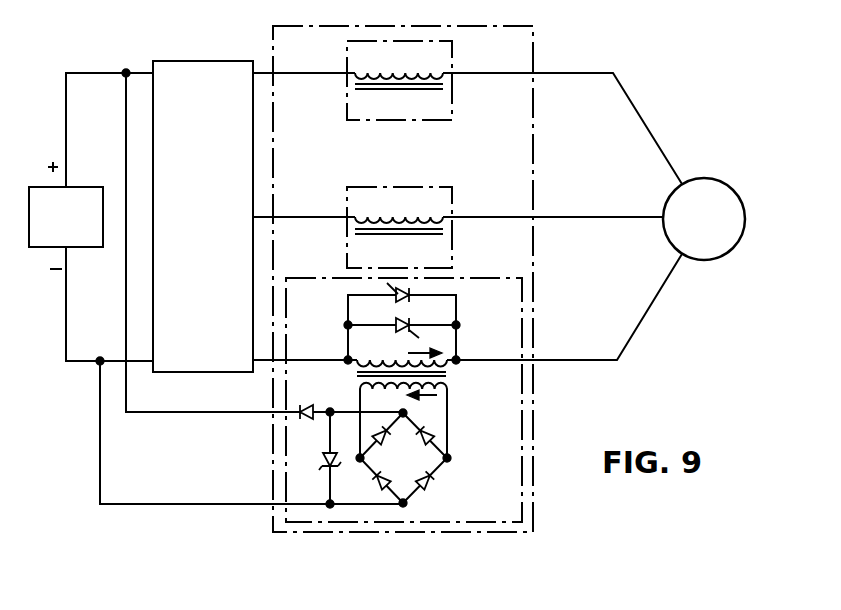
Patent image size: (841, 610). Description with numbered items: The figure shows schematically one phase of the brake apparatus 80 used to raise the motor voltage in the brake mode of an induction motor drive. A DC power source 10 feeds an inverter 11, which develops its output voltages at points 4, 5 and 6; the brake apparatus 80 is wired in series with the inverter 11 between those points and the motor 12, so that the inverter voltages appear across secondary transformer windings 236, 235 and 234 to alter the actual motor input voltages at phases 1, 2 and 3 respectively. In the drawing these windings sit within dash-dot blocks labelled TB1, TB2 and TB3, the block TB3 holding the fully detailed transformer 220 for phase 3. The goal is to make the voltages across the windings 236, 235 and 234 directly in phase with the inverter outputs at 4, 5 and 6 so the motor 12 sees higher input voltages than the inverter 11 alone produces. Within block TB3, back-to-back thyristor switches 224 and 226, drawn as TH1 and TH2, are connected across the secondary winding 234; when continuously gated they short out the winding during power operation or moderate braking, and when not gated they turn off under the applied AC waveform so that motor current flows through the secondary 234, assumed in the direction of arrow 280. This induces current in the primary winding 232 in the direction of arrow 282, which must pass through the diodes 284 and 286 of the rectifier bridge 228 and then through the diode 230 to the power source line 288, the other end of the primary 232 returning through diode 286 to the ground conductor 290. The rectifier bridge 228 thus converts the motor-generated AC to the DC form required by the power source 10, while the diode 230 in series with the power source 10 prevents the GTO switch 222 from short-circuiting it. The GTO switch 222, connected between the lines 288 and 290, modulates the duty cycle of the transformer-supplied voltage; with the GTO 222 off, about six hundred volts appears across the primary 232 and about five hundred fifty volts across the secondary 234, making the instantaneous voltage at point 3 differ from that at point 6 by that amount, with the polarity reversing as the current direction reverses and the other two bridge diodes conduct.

The DC power source 10 is at (80, 187).
The inverter 11 is at (190, 61).
The inverter output point 4 is at (265, 72).
The inverter output point 5 is at (266, 217).
The inverter output point 6 is at (266, 360).
The motor phase 1 is at (585, 73).
The motor phase 2 is at (593, 217).
The motor phase 3 is at (577, 360).
The motor 12 is at (703, 178).
The brake apparatus 80 is at (533, 50).
The transformer block 1 TB1 is at (452, 47).
The transformer block 2 TB2 is at (452, 193).
The transformer block 3 TB3 is at (480, 278).
The secondary transformer winding 236 is at (375, 64).
The secondary transformer winding 235 is at (375, 206).
The secondary transformer winding 234 is at (370, 360).
The primary winding 232 is at (368, 389).
The transformer 220 is at (450, 373).
The thyristor switch 224 is at (398, 292).
The thyristor switch 226 is at (398, 321).
The thyristor TH1 is at (410, 288).
The thyristor TH2 is at (410, 317).
The arrow 280 is at (440, 348).
The arrow 282 is at (432, 399).
The GTO switch 222 is at (322, 461).
The rectifier bridge 228 is at (391, 458).
The diode 230 is at (300, 404).
The diode 284 is at (372, 434).
The diode 286 is at (430, 487).
The power source line 288 is at (166, 413).
The ground conductor 290 is at (108, 504).